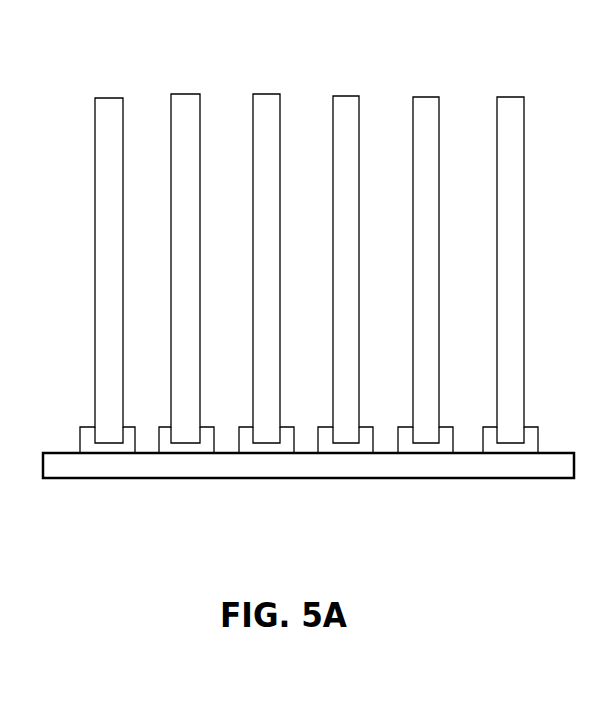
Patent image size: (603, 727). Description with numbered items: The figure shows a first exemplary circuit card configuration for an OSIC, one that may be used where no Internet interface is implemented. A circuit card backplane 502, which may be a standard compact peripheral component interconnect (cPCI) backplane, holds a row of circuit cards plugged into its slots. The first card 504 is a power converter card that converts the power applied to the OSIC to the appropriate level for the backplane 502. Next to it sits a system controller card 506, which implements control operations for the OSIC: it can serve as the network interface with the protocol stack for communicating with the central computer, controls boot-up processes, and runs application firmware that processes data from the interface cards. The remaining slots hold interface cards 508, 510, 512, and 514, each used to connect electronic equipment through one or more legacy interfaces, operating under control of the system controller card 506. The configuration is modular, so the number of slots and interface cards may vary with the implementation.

The circuit card backplane 502 is at (389, 480).
The first card 504 is at (116, 105).
The system controller card 506 is at (190, 117).
The interface card 508 is at (277, 118).
The interface card 510 is at (352, 105).
The interface card 512 is at (428, 105).
The interface card 514 is at (515, 106).